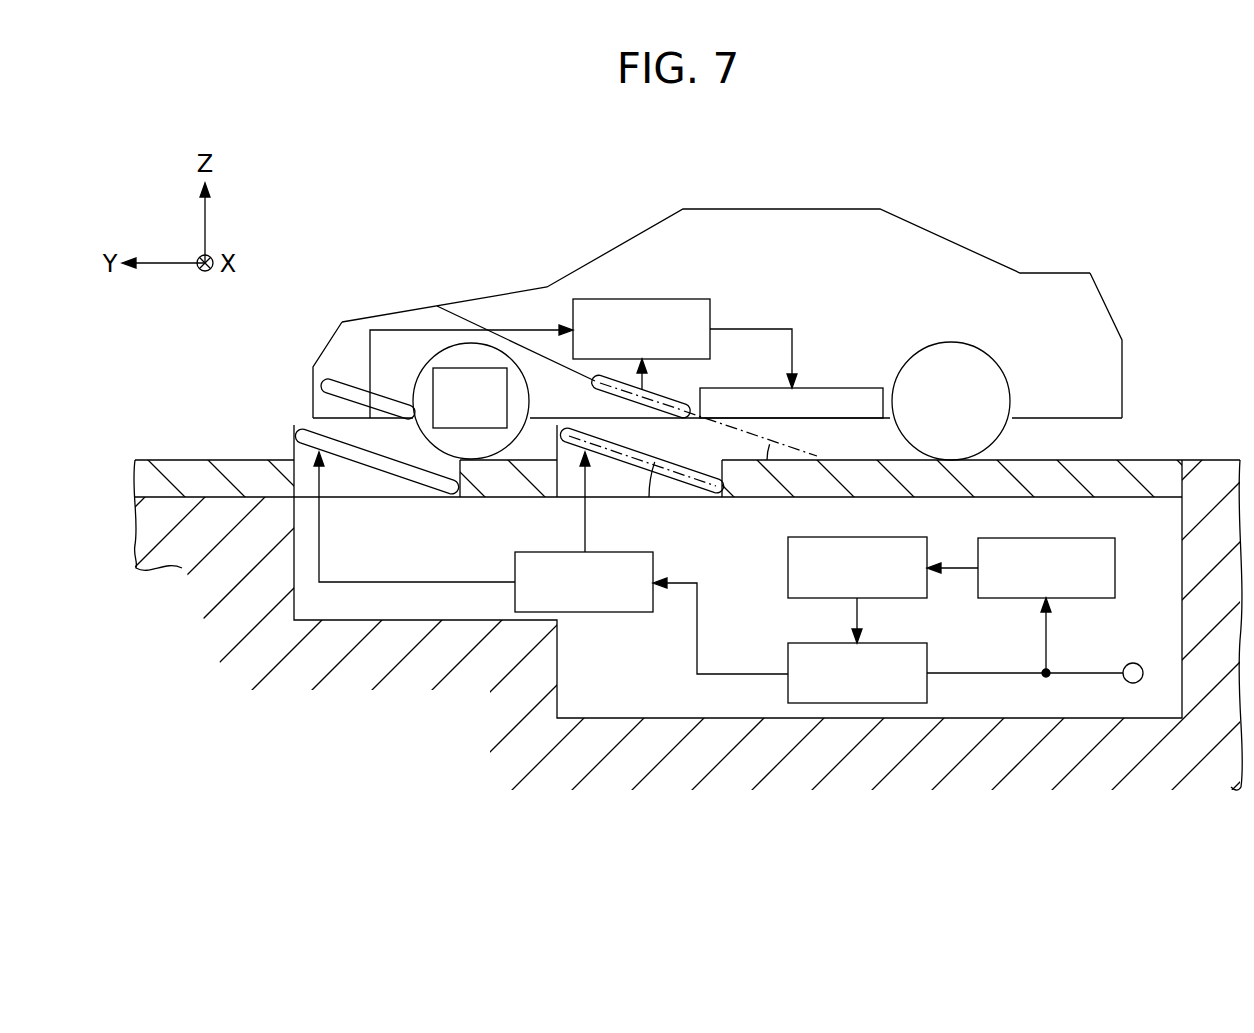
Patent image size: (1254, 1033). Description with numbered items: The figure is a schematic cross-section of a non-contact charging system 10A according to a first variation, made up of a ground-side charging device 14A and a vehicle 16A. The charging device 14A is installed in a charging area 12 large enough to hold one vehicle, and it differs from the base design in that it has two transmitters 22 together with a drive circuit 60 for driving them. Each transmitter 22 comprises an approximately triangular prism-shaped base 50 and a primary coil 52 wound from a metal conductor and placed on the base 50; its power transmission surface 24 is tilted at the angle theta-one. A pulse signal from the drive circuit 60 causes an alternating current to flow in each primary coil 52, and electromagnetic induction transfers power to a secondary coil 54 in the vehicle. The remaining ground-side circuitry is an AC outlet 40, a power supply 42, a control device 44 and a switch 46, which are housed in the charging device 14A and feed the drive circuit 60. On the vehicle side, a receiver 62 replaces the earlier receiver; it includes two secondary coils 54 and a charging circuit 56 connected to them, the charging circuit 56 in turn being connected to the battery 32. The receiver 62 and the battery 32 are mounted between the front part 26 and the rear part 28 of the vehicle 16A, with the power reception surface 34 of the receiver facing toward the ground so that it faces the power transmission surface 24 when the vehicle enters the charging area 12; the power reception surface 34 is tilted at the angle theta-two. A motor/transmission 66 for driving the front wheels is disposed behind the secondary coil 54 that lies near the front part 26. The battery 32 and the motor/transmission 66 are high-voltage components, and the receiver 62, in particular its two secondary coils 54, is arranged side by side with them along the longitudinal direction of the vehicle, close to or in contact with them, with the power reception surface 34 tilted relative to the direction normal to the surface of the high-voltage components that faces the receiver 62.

The non-contact charging system 10A is at (376, 146).
The charging area 12 is at (267, 447).
The charging device 14A is at (1155, 508).
The vehicle 16A is at (721, 348).
The transmitter 22 is at (537, 509).
The power transmission surface 24 is at (534, 488).
The front part 26 is at (338, 358).
The rear part 28 is at (1097, 325).
The battery 32 is at (848, 388).
The power reception surface 34 is at (327, 406).
The AC outlet 40 is at (1133, 663).
The power supply 42 is at (1073, 537).
The control device 44 is at (896, 537).
The switch 46 is at (893, 643).
The base 50 is at (534, 490).
The primary coil 52 is at (430, 494).
The secondary coil 54 is at (350, 388).
The charging circuit 56 is at (573, 301).
The drive circuit 60 is at (621, 552).
The receiver 62 is at (527, 324).
The motor/transmission 66 is at (479, 425).